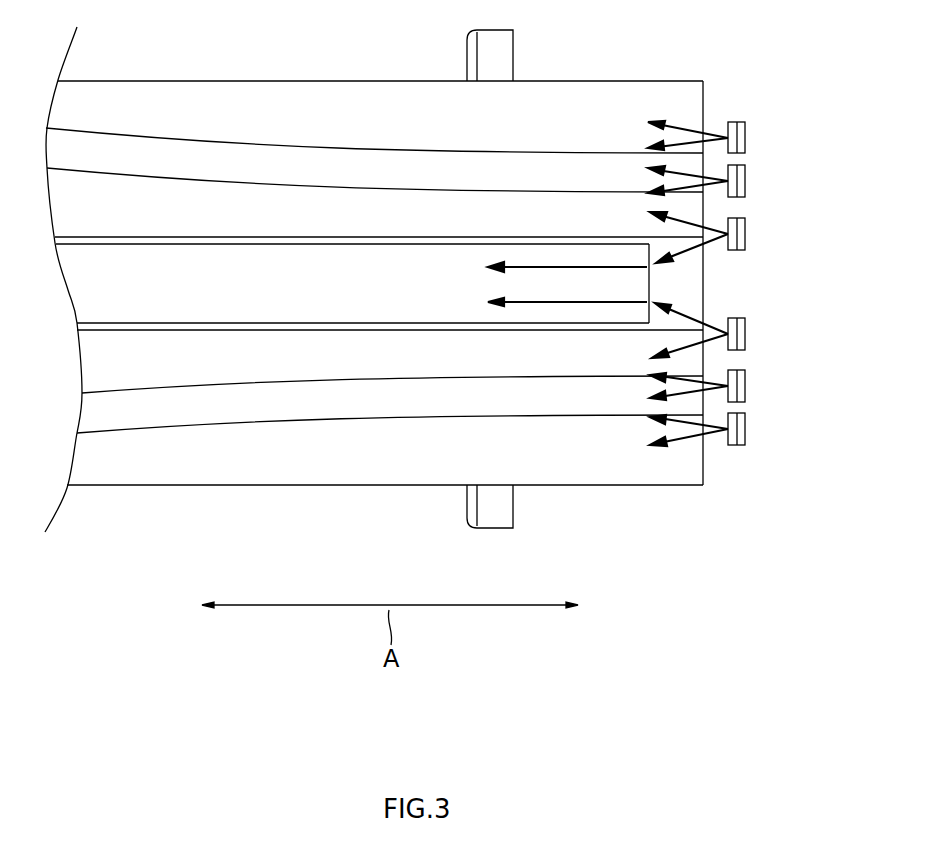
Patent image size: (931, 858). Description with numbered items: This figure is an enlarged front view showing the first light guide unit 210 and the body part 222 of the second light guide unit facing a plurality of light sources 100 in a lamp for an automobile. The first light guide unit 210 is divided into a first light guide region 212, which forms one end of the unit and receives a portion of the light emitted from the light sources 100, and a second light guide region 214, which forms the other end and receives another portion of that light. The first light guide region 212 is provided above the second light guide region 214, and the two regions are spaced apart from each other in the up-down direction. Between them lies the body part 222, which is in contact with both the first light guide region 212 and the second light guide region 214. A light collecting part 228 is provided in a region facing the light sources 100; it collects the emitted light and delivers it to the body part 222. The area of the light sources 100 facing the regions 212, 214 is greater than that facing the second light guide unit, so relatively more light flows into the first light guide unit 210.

The light source 100 is at (747, 140).
The first light guide unit 210 is at (738, 562).
The first light guide region 212 is at (250, 92).
The second light guide region 214 is at (257, 472).
The body part 222 is at (407, 265).
The light collecting part 228 is at (688, 283).